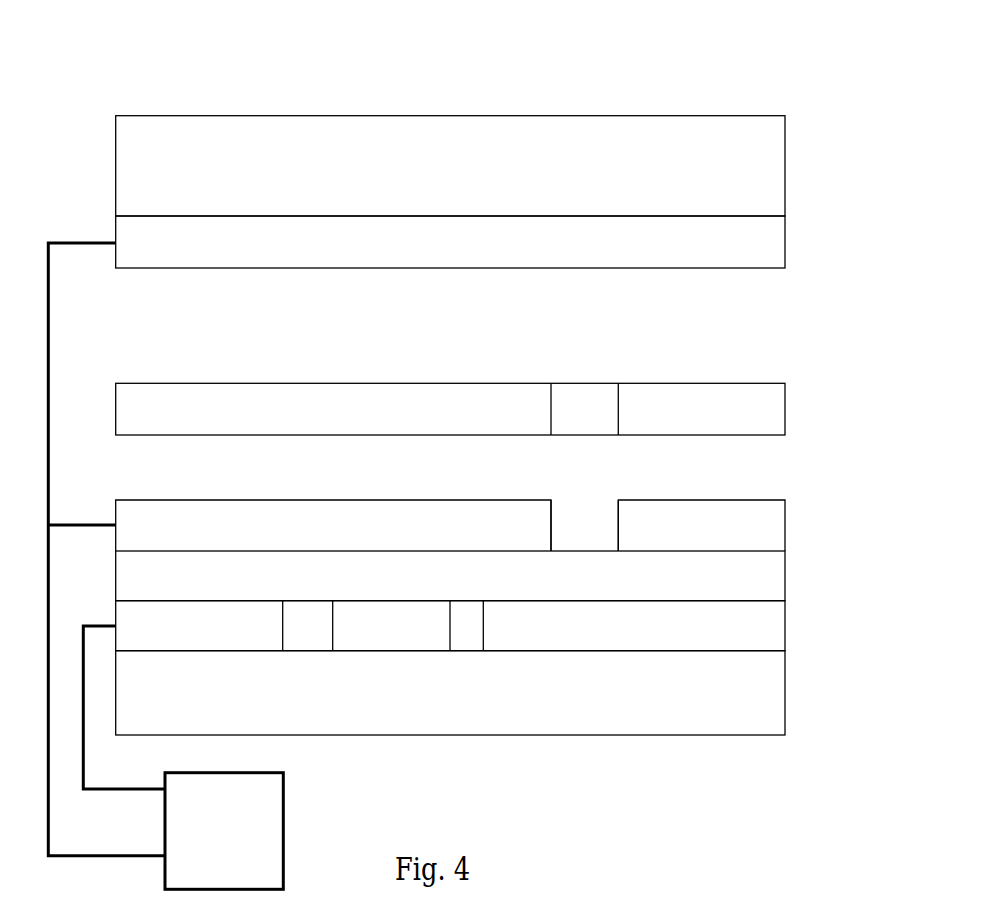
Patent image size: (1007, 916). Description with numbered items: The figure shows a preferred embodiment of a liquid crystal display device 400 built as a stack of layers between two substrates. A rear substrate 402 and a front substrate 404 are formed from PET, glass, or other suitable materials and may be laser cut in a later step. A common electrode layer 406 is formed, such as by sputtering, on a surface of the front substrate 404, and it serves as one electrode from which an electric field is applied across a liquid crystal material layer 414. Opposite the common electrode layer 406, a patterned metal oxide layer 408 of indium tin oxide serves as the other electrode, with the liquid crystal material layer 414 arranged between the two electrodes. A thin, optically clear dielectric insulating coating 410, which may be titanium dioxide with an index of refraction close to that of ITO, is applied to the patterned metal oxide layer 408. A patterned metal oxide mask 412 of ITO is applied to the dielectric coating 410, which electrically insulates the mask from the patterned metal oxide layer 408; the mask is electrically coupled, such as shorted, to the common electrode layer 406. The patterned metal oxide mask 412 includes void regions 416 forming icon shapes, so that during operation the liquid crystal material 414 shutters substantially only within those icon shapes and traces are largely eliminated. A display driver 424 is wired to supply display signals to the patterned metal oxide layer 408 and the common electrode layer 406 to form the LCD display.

The liquid crystal display device 400 is at (242, 65).
The rear substrate 402 is at (785, 693).
The front substrate 404 is at (785, 167).
The common electrode layer 406 is at (785, 243).
The patterned metal oxide layer 408 is at (785, 626).
The optically clear dielectric insulating coating 410 is at (785, 576).
The patterned metal oxide mask 412 is at (785, 525).
The liquid crystal material layer 414 is at (785, 408).
The void regions 416 is at (583, 507).
The display driver 424 is at (165, 566).